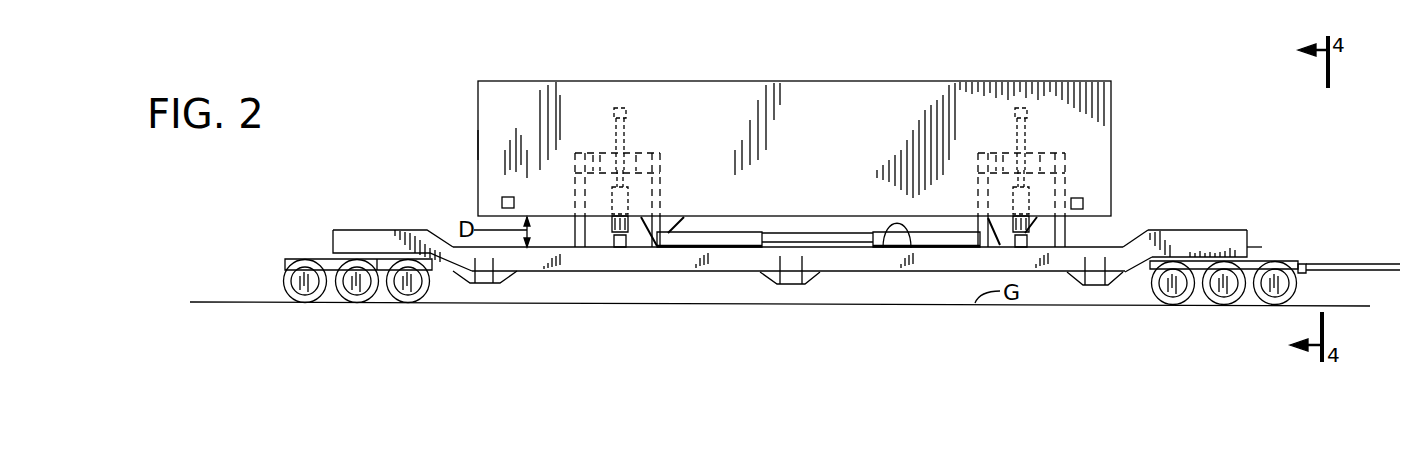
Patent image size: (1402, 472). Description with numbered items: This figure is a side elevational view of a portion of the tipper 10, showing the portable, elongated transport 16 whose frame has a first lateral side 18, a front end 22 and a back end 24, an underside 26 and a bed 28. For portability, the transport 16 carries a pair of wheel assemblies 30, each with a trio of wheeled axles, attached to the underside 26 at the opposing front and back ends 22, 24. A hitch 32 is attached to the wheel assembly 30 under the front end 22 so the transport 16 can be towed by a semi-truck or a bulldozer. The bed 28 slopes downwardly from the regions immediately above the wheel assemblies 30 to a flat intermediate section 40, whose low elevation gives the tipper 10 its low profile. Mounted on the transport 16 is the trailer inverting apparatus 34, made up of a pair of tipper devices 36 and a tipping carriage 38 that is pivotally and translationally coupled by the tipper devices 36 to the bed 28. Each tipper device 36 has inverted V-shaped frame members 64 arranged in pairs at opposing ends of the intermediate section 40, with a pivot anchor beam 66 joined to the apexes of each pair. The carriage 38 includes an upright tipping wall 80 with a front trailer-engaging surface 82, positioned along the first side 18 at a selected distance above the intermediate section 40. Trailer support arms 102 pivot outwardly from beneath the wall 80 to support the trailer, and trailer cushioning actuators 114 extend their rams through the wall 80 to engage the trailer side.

The tipper 10 is at (1180, 122).
The transport 16 is at (1233, 228).
The first lateral side 18 is at (1192, 240).
The front end 22 is at (1262, 247).
The back end 24 is at (333, 237).
The underside 26 is at (642, 272).
The bed 28 is at (1170, 230).
The wheel assemblies 30 is at (357, 305).
The hitch 32 is at (1340, 265).
The trailer inverting apparatus 34 is at (350, 148).
The tipper devices 36 is at (1013, 133).
The tipping carriage 38 is at (470, 112).
The flat intermediate section 40 is at (1105, 247).
The inverted V-shaped frame members 64 is at (577, 186).
The pivot anchor beam 66 is at (581, 150).
The tipping wall 80 is at (477, 147).
The trailer-engaging surface 82 is at (520, 103).
The trailer support arms 102 is at (912, 258).
The trailer cushioning actuators 114 is at (1083, 203).